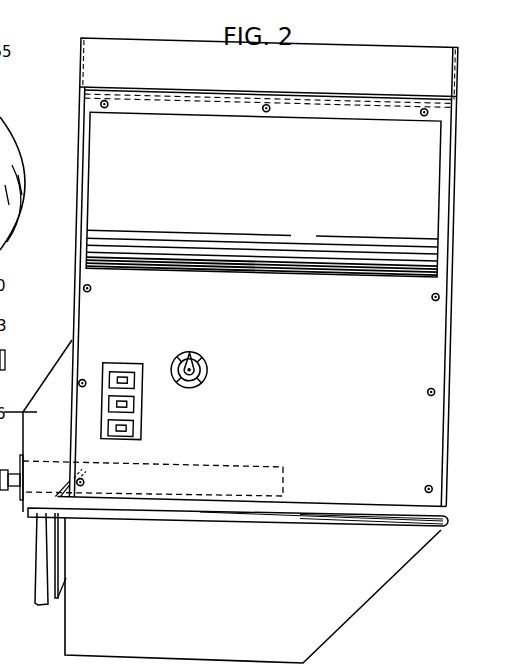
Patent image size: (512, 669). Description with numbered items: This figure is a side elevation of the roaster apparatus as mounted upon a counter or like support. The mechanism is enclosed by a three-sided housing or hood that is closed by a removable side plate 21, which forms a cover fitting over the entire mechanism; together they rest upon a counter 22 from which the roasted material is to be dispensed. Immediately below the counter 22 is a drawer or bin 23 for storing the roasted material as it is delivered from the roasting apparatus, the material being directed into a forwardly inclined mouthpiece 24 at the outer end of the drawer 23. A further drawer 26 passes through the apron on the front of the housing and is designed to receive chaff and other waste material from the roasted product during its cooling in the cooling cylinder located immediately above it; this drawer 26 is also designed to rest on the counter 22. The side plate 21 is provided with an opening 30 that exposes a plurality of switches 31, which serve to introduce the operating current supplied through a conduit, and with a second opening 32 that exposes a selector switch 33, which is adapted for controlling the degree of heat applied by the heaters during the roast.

The side plate 21 is at (90, 305).
The counter 22 is at (250, 511).
The drawer or bin 23 is at (347, 597).
The mouthpiece 24 is at (45, 560).
The drawer 26 is at (248, 467).
The opening 30 is at (143, 415).
The switches 31 is at (110, 425).
The opening 32 is at (194, 354).
The selector switch 33 is at (208, 370).